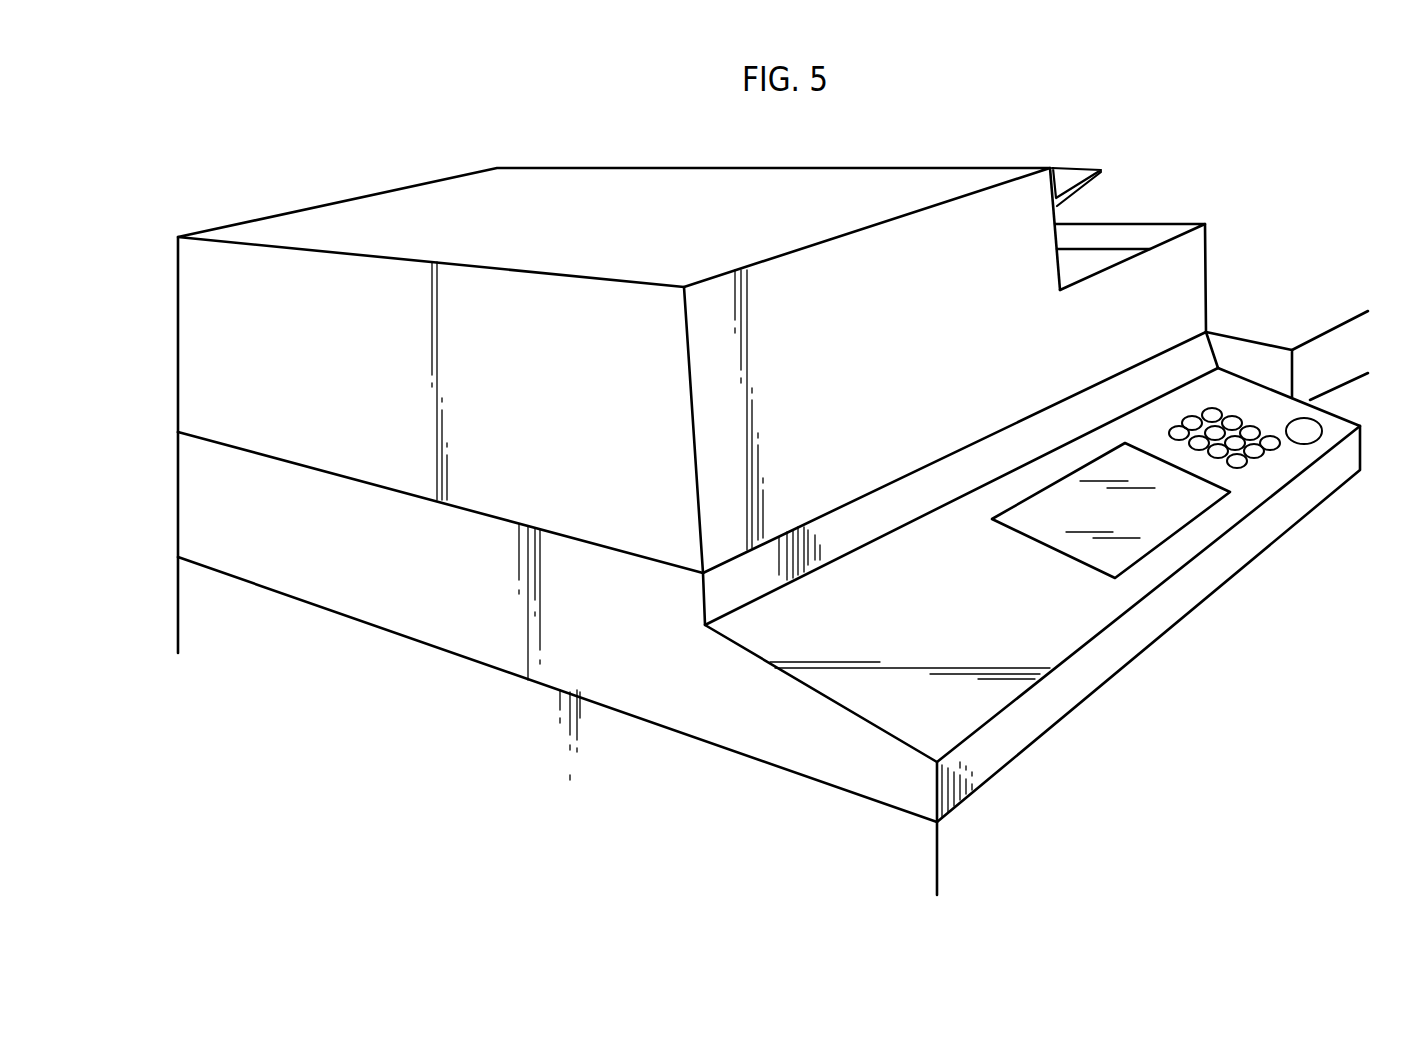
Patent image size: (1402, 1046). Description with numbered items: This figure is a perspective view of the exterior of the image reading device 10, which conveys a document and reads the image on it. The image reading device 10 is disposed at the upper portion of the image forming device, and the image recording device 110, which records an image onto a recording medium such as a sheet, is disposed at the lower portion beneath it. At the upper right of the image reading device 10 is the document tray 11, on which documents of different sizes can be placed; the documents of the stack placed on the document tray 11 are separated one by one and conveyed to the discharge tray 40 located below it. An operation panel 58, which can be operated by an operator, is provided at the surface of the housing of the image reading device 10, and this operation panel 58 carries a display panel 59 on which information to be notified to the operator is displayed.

The image reading device 10 is at (177, 320).
The image recording device 110 is at (210, 643).
The document tray 11 is at (1067, 180).
The discharge tray 40 is at (1102, 257).
The operation panel 58 is at (1282, 472).
The display panel 59 is at (1120, 558).